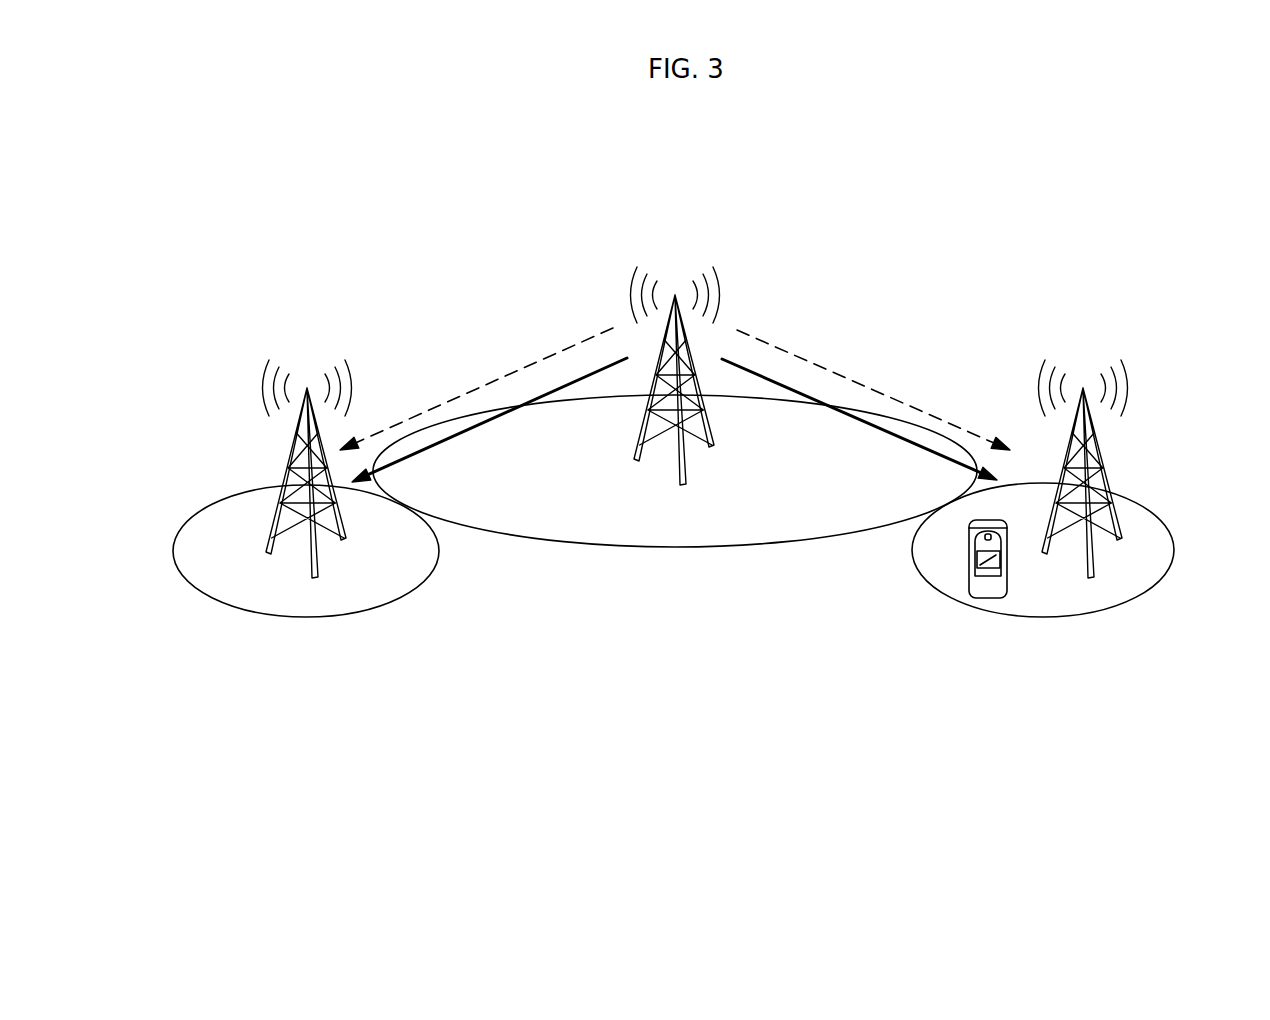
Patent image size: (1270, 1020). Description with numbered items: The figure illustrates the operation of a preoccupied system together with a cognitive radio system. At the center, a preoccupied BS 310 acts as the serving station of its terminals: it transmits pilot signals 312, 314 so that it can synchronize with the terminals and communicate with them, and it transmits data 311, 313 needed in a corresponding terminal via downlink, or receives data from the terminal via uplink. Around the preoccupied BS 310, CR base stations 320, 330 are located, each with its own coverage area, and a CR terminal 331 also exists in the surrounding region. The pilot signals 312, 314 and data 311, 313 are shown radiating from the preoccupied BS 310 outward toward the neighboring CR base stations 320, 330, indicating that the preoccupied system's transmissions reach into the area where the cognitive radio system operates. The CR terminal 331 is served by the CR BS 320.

The preoccupied BS 310 is at (688, 458).
The data 311 is at (859, 419).
The pilot signal 312 is at (873, 390).
The data 313 is at (489, 420).
The pilot signal 314 is at (476, 389).
The CR base station 320 is at (295, 445).
The CR base station 330 is at (1100, 440).
The CR terminal 331 is at (990, 598).